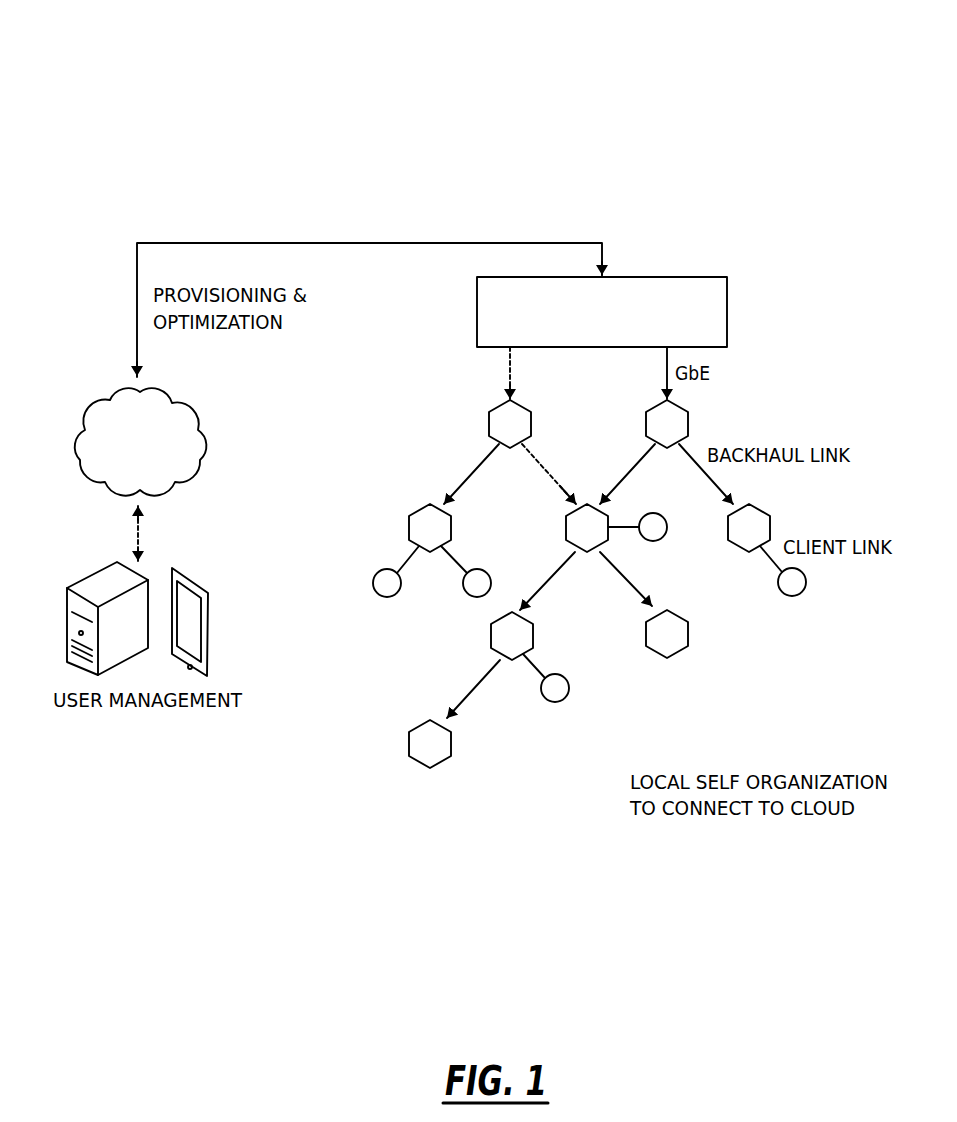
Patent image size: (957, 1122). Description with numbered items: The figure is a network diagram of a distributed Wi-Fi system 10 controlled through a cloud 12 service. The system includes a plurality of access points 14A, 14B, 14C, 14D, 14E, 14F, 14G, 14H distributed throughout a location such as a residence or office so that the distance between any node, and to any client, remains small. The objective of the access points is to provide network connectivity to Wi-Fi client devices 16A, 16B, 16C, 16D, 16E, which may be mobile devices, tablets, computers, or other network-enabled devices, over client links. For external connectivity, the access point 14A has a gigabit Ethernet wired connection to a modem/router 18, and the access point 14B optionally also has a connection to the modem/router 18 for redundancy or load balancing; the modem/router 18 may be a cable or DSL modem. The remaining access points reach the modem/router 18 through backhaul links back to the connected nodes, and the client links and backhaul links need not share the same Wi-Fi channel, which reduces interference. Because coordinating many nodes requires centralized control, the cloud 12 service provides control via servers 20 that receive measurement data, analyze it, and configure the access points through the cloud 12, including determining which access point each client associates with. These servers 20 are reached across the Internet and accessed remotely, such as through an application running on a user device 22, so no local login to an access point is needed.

The distributed Wi-Fi system 10 is at (484, 50).
The cloud 12 is at (203, 430).
The access point 14A is at (688, 420).
The access point 14B is at (531, 420).
The access point 14C is at (451, 522).
The access point 14D is at (566, 522).
The access point 14E is at (770, 518).
The access point 14F is at (533, 630).
The access point 14G is at (648, 645).
The access point 14H is at (409, 752).
The Wi-Fi client device 16A is at (374, 586).
The Wi-Fi client device 16B is at (464, 589).
The Wi-Fi client device 16C is at (664, 536).
The Wi-Fi client device 16D is at (780, 590).
The Wi-Fi client device 16E is at (542, 694).
The modem/router 18 is at (708, 277).
The server 20 is at (67, 622).
The user device 22 is at (209, 620).